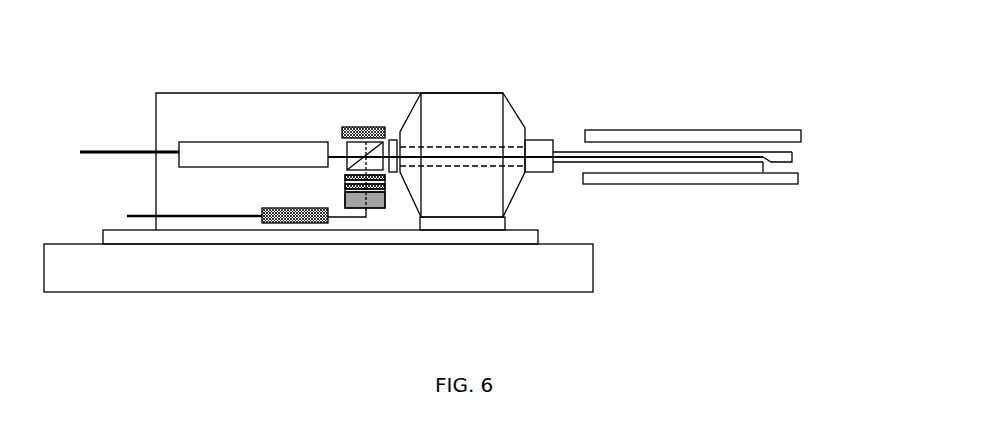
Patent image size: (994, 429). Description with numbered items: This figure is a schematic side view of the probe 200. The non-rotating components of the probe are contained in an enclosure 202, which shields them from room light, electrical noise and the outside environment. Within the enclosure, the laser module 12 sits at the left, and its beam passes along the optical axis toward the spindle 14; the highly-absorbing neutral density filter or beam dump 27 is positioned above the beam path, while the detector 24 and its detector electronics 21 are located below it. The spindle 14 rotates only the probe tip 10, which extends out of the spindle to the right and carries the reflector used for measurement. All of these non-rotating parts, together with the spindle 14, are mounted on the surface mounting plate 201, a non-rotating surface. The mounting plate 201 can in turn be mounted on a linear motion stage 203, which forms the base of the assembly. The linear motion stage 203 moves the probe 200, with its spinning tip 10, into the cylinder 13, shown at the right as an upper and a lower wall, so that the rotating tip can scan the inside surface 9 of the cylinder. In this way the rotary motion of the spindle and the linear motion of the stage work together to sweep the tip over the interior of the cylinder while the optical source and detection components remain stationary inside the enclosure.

The probe 200 is at (312, 133).
The enclosure 202 is at (192, 110).
The laser module 12 is at (257, 143).
The beam dump 27 is at (341, 127).
The detector 24 is at (382, 212).
The detector electronics 21 is at (278, 208).
The spindle 14 is at (462, 108).
The probe tip 10 is at (582, 149).
The cylinder 13 is at (780, 147).
The inside surface 9 is at (722, 175).
The surface mounting plate 201 is at (540, 229).
The linear motion stage 203 is at (594, 274).